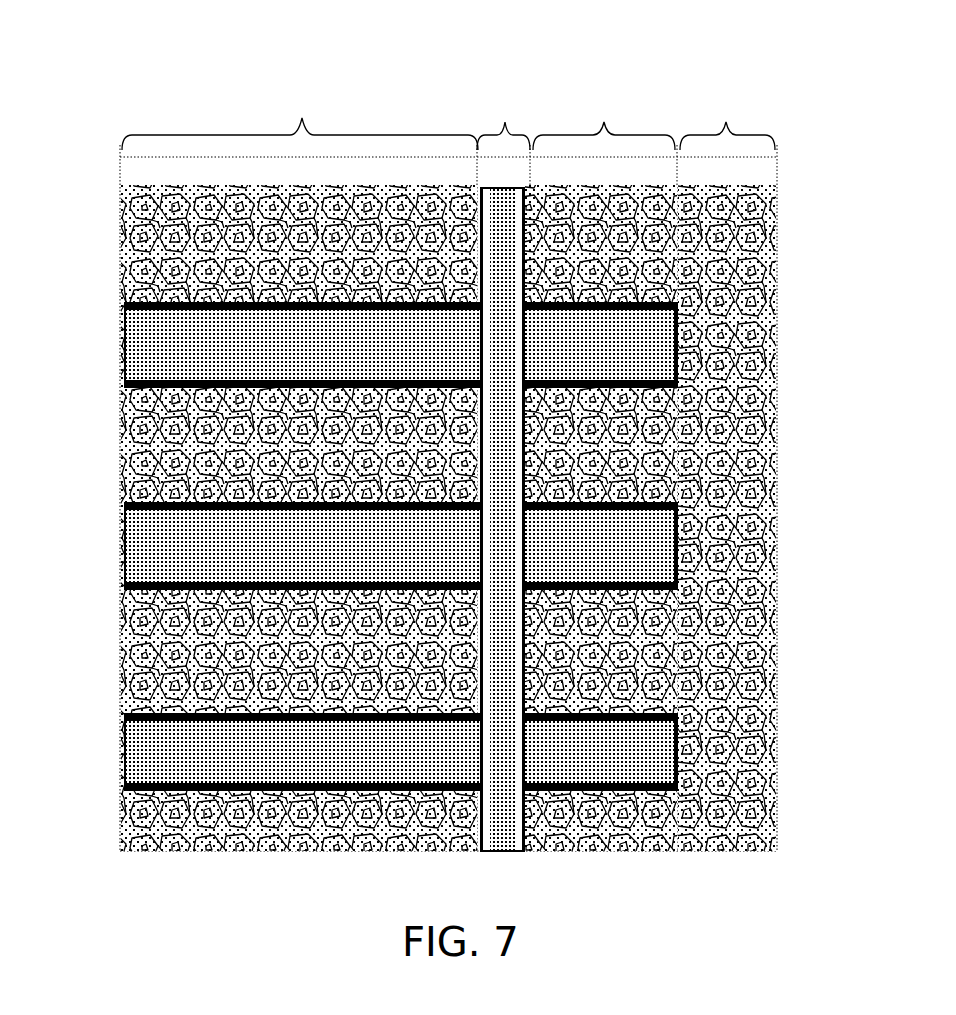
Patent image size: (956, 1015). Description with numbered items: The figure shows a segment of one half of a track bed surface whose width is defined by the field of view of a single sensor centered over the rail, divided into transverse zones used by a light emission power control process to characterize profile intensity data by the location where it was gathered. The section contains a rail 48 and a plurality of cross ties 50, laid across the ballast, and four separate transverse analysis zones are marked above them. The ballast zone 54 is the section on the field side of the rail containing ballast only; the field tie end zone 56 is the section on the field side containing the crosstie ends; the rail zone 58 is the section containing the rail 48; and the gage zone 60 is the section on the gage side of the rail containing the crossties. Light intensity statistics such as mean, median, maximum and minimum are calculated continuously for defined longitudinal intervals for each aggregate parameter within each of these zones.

The rail 48 is at (505, 462).
The cross ties 50 is at (143, 548).
The ballast zone 54 is at (727, 112).
The field tie end zone 56 is at (606, 112).
The rail zone 58 is at (508, 115).
The gage zone 60 is at (303, 108).